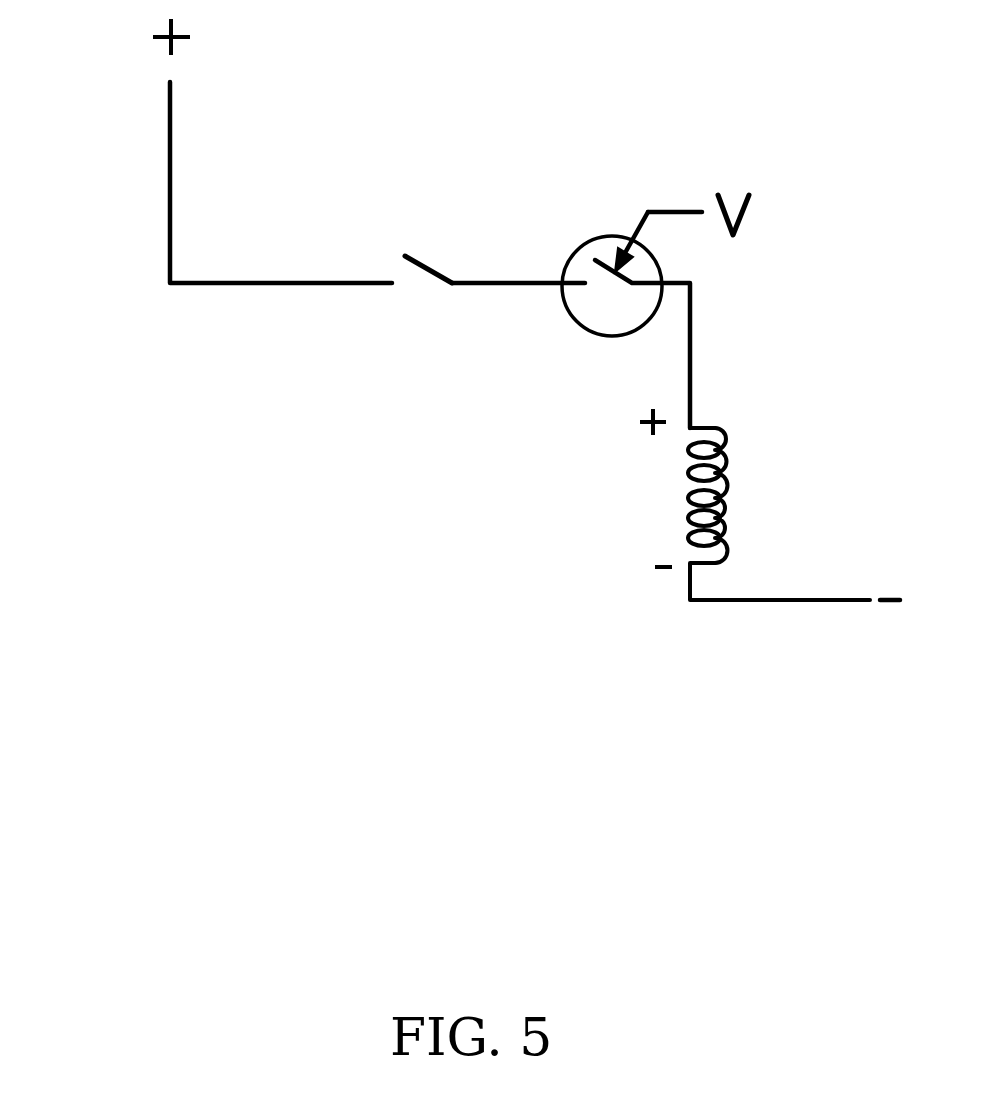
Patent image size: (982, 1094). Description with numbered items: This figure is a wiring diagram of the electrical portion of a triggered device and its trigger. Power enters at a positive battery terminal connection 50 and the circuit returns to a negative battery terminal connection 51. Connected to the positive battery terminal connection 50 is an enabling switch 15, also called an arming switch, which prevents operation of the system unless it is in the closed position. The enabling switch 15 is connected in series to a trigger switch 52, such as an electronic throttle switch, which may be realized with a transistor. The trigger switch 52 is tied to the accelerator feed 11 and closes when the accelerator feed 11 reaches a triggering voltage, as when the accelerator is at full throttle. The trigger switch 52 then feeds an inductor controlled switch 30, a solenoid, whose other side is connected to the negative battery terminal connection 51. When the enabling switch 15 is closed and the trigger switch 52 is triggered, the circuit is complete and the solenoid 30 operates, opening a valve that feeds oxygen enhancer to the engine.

The positive battery terminal connection 50 is at (148, 35).
The enabling switch 15 is at (413, 282).
The trigger switch 52 is at (570, 322).
The accelerator feed 11 is at (752, 218).
The inductor controlled switch 30 is at (725, 485).
The negative battery terminal connection 51 is at (897, 605).